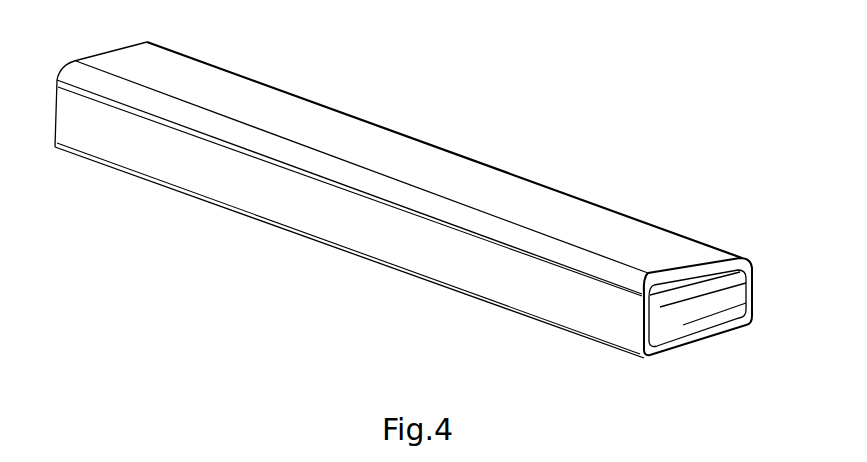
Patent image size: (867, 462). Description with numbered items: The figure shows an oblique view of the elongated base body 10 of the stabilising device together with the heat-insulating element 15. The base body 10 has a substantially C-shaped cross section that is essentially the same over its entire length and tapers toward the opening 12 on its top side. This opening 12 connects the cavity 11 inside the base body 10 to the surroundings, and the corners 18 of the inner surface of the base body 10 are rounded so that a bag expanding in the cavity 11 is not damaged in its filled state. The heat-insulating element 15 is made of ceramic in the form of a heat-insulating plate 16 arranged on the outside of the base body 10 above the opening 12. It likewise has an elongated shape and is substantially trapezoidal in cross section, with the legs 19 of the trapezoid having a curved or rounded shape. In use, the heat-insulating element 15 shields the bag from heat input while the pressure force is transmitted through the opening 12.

The base body 10 is at (478, 275).
The cavity 11 is at (670, 330).
The opening 12 is at (642, 294).
The heat-insulating element 15 is at (553, 205).
The heat-insulating plate 16 is at (585, 220).
The corners 18 is at (727, 311).
The legs 19 is at (745, 260).